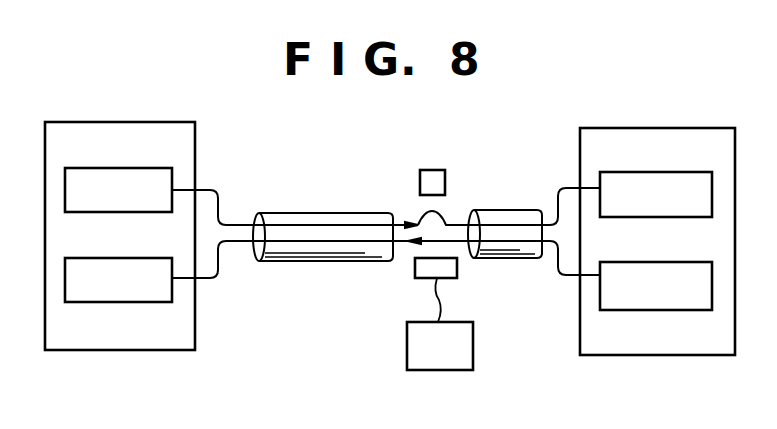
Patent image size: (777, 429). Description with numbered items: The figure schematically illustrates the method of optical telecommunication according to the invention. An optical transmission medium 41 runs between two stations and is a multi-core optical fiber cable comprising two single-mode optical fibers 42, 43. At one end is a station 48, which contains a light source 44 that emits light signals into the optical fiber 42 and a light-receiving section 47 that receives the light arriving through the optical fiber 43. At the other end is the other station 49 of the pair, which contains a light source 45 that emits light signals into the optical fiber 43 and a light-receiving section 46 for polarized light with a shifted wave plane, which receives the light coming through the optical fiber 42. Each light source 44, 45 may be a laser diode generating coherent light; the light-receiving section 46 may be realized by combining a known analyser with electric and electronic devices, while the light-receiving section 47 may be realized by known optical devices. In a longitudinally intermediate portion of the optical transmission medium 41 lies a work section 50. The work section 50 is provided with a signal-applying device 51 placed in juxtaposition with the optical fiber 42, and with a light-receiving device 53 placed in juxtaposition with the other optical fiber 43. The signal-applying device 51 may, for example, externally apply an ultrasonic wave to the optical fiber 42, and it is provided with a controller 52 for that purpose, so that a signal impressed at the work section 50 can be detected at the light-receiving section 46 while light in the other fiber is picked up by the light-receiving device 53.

The optical transmission medium 41 is at (325, 213).
The optical fiber 42 is at (237, 246).
The optical fiber 43 is at (235, 222).
The light source 44 is at (667, 310).
The light source 45 is at (168, 168).
The light-receiving section 46 is at (142, 302).
The light-receiving section 47 is at (618, 172).
The station 48 is at (677, 128).
The station 49 is at (88, 122).
The work section 50 is at (440, 223).
The signal-applying device 51 is at (457, 270).
The controller 52 is at (473, 343).
The light-receiving device 53 is at (445, 170).